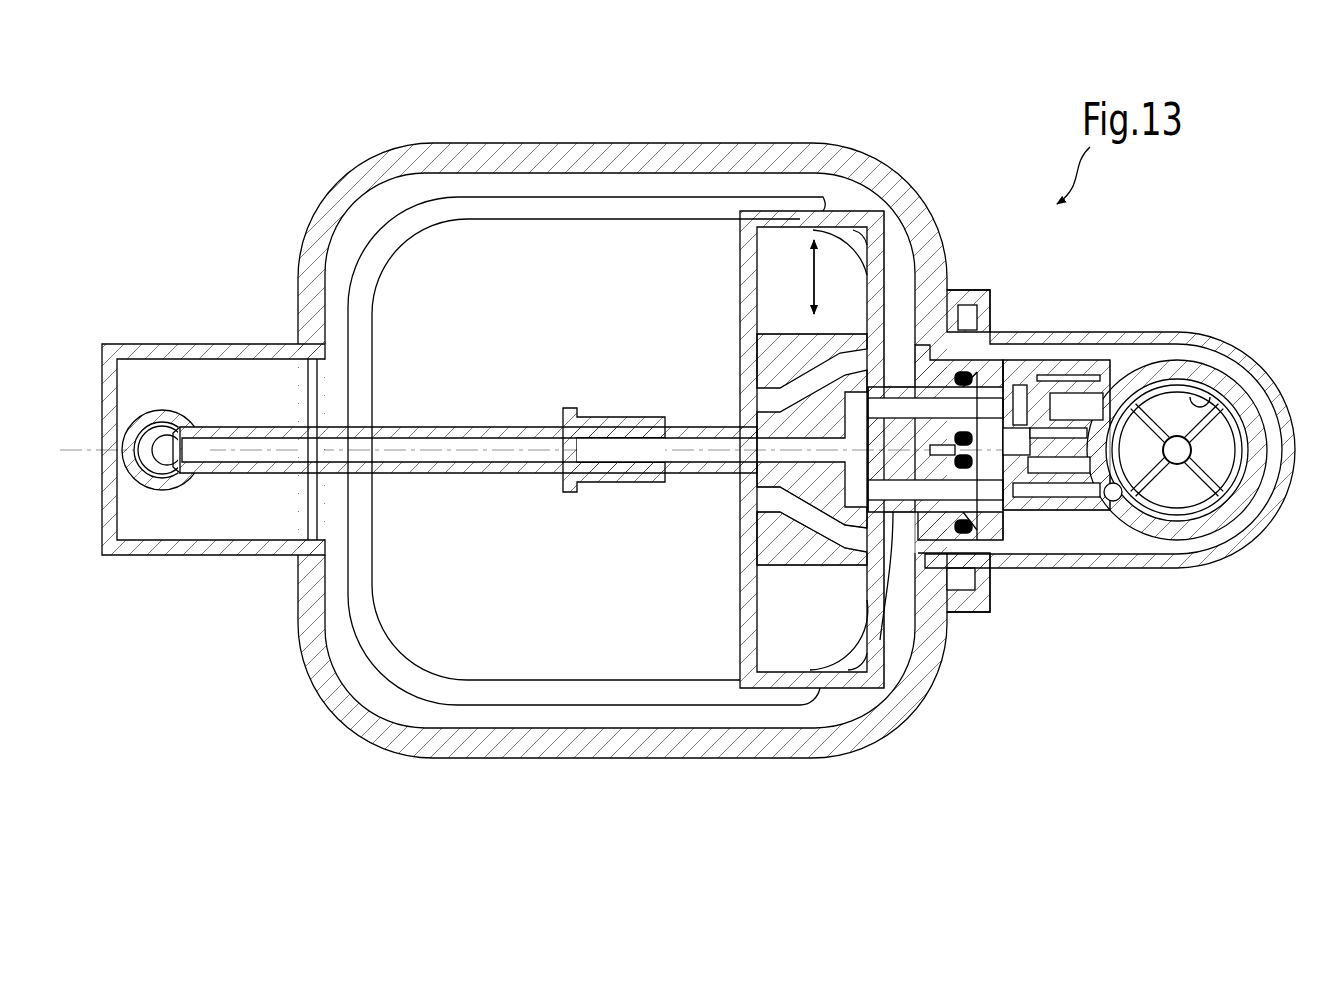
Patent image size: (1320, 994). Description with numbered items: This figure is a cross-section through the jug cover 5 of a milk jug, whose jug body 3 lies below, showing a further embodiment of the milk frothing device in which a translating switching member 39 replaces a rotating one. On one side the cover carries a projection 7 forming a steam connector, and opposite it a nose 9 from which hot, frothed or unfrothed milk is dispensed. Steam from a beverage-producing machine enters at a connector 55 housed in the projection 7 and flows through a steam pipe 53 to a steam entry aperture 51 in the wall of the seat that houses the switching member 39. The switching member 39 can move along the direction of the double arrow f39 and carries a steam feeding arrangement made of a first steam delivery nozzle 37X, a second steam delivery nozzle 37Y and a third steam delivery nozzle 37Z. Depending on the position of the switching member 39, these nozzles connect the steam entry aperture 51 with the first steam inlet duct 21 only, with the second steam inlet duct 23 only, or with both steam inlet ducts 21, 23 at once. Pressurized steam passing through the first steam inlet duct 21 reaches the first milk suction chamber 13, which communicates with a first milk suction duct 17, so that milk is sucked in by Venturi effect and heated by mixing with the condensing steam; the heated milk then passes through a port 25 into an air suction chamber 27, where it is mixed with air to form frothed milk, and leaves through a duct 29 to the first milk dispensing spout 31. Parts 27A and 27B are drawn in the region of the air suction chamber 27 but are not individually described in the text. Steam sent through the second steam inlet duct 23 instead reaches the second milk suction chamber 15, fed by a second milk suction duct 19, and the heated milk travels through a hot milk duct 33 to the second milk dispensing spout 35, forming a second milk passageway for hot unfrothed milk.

The jug body 3 is at (556, 279).
The jug cover 5 is at (650, 146).
The projection 7 is at (213, 366).
The nose 9 is at (1110, 422).
The first milk suction chamber 13 is at (1003, 383).
The second milk suction chamber 15 is at (993, 447).
The first milk suction duct 17 is at (1003, 463).
The second milk suction duct 19 is at (987, 523).
The first steam inlet duct 21 is at (905, 410).
The second steam inlet duct 23 is at (917, 493).
The port 25 is at (1022, 400).
The air suction chamber 27 is at (1135, 397).
The insert upper part 27A is at (1032, 388).
The insert lower part 27B is at (1055, 363).
The duct 29 is at (1100, 403).
The first milk dispensing spout 31 is at (1202, 408).
The hot milk duct 33 is at (1075, 494).
The second milk dispensing spout 35 is at (1110, 502).
The first steam delivery nozzle 37X is at (827, 372).
The second steam delivery nozzle 37Y is at (827, 528).
The third steam delivery nozzle 37Z is at (787, 455).
The translating switching member 39 is at (771, 365).
The double arrow f39 is at (806, 262).
The steam entry aperture 51 is at (667, 445).
The steam pipe 53 is at (418, 446).
The connector 55 is at (168, 458).